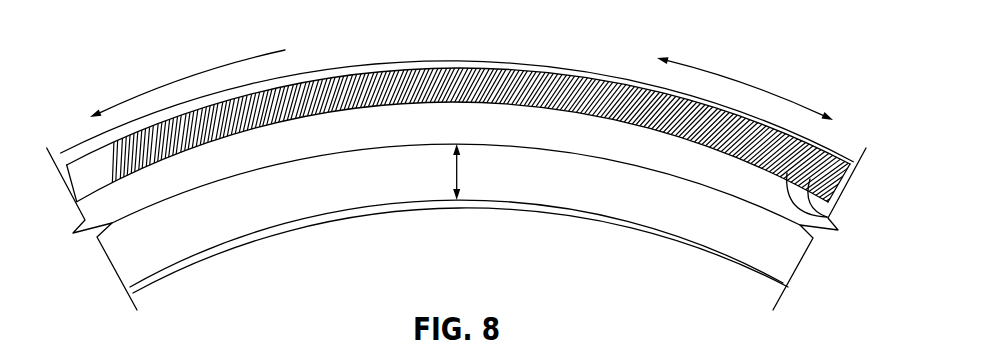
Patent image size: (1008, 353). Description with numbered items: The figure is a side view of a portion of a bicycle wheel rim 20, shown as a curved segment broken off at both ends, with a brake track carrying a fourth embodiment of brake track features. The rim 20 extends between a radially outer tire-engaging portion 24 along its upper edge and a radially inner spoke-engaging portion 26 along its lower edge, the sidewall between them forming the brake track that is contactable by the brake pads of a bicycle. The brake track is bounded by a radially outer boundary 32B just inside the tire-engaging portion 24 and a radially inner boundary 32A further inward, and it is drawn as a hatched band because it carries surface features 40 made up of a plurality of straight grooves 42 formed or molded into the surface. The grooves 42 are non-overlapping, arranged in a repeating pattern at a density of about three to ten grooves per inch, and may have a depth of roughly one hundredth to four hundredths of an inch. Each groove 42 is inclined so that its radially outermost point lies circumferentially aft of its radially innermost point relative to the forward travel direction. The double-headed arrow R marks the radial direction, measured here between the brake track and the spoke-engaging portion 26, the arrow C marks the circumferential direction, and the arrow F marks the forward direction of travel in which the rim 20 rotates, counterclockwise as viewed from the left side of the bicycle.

The wheel rim 20 is at (250, 286).
The radially outer tire-engaging portion 24 is at (582, 69).
The radially inner spoke-engaging portion 26 is at (455, 203).
The radially inner boundary 32A is at (455, 104).
The radially outer boundary 32B is at (455, 65).
The surface features 40 is at (245, 141).
The grooves 42 is at (827, 217).
The radial direction R is at (453, 167).
The forward direction of travel F is at (190, 75).
The circumferential direction C is at (748, 83).